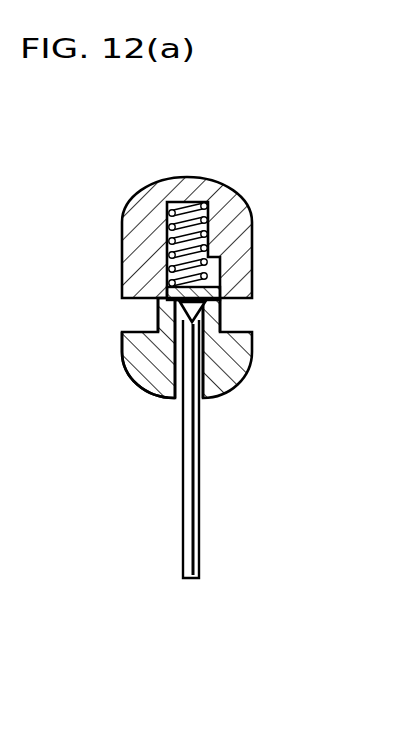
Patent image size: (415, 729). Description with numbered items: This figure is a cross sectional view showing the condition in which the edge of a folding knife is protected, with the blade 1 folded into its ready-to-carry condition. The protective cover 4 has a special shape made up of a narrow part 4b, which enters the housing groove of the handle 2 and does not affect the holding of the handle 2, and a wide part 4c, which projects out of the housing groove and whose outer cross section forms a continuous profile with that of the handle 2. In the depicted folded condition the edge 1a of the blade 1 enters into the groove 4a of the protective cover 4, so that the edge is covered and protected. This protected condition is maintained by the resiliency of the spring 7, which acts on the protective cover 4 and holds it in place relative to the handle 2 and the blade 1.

The blade 1 is at (182, 497).
The edge 1a is at (162, 309).
The handle 2 is at (211, 177).
The protective cover 4 is at (145, 392).
The groove 4a is at (203, 398).
The narrow part 4b is at (216, 315).
The wide part 4c is at (127, 365).
The spring 7 is at (122, 231).